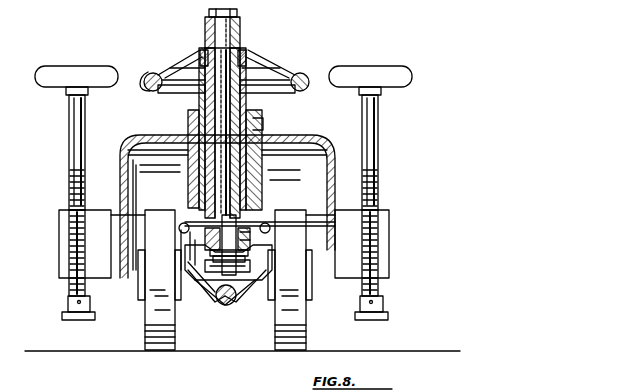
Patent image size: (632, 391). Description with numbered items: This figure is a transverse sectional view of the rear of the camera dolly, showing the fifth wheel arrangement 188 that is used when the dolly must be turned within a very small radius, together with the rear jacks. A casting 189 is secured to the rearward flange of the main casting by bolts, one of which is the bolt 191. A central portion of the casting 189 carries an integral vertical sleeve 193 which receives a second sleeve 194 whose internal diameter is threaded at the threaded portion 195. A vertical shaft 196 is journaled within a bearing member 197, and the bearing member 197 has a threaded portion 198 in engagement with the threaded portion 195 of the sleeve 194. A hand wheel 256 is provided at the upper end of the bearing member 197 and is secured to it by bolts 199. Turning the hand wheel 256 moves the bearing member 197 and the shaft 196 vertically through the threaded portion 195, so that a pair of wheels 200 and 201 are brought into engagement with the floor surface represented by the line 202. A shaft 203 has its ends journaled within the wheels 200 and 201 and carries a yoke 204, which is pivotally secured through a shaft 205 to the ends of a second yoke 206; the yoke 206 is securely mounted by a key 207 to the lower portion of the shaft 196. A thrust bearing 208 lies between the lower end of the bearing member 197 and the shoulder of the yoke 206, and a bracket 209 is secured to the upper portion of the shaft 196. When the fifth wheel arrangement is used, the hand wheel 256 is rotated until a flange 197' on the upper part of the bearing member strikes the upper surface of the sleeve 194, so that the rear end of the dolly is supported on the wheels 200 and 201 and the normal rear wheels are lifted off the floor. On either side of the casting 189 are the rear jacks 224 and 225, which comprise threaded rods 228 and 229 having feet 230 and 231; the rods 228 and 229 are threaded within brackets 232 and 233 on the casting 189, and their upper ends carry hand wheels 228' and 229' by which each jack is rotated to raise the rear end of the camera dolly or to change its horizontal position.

The fifth wheel arrangement 188 is at (320, 60).
The casting 189 is at (300, 136).
The bolt 191 is at (172, 247).
The vertical sleeve 193 is at (264, 130).
The second sleeve 194 is at (250, 187).
The threaded portion 195 is at (188, 118).
The vertical shaft 196 is at (246, 52).
The bearing member 197 is at (274, 78).
The flange 197' is at (288, 59).
The threaded portion 198 is at (202, 94).
The bolt 199 is at (203, 50).
The wheel 200 is at (166, 350).
The wheel 201 is at (292, 350).
The floor surface line 202 is at (366, 351).
The shaft 203 is at (200, 298).
The yoke 204 is at (252, 305).
The shaft 205 is at (224, 306).
The second yoke 206 is at (250, 258).
The key 207 is at (250, 244).
The thrust bearing 208 is at (262, 236).
The bracket 209 is at (240, 32).
The rear jack 224 is at (70, 138).
The rear jack 225 is at (378, 148).
The threaded rod 228 is at (56, 188).
The hand wheel 228' is at (76, 66).
The threaded rod 229 is at (389, 188).
The hand wheel 229' is at (385, 73).
The foot 230 is at (68, 316).
The foot 231 is at (386, 312).
The bracket 232 is at (62, 260).
The bracket 233 is at (386, 256).
The hand wheel 256 is at (148, 72).